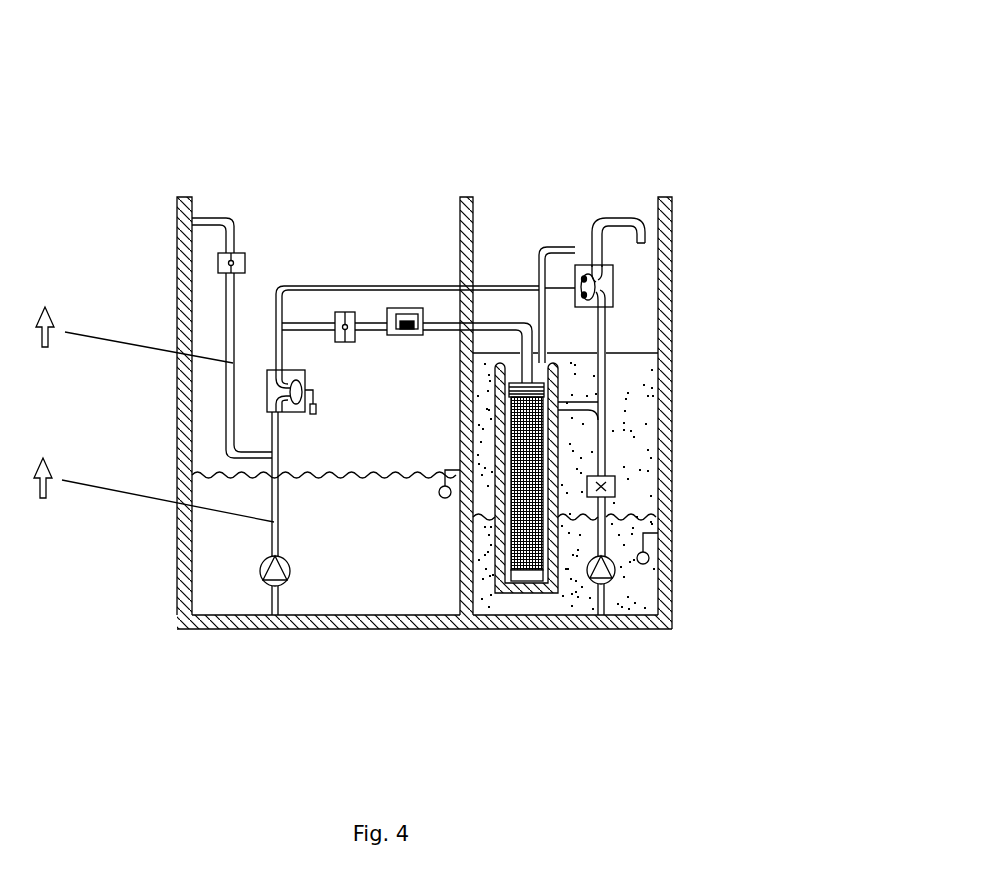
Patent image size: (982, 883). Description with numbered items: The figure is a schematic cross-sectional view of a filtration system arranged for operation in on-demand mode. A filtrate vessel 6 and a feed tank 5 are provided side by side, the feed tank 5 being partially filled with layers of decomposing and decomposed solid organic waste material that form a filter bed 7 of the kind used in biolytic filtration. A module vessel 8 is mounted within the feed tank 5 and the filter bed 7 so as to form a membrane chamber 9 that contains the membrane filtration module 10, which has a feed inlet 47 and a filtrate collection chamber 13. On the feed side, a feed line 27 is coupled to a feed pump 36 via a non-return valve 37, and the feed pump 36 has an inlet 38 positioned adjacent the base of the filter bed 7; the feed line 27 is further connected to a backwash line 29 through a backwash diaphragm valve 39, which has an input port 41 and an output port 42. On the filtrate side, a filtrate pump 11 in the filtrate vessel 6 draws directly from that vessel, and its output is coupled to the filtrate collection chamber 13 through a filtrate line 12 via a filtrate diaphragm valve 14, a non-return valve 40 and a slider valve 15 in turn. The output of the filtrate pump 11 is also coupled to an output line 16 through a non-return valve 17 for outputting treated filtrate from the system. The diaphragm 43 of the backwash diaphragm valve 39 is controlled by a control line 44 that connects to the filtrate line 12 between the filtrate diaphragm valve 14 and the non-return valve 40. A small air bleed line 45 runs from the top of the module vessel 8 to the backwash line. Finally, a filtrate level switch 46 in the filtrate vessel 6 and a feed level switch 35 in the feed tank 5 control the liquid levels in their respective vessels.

The feed tank 5 is at (673, 572).
The filtrate vessel 6 is at (178, 337).
The filter bed 7 is at (636, 367).
The module vessel 8 is at (557, 470).
The membrane chamber 9 is at (505, 593).
The membrane filtration module 10 is at (541, 467).
The filtrate pump 11 is at (273, 578).
The filtrate line 12 is at (500, 287).
The filtrate collection chamber 13 is at (515, 365).
The filtrate diaphragm valve 14 is at (272, 370).
The slider valve 15 is at (408, 308).
The output line 16 is at (219, 217).
The non-return valve 17 is at (217, 254).
The feed line 27 is at (597, 540).
The backwash line 29 is at (604, 347).
The feed level switch 35 is at (648, 551).
The feed pump 36 is at (611, 577).
The non-return valve 37 is at (614, 478).
The inlet 38 is at (647, 628).
The backwash diaphragm valve 39 is at (605, 285).
The non-return valve 40 is at (342, 312).
The input port 41 is at (604, 318).
The output port 42 is at (603, 252).
The diaphragm 43 is at (603, 214).
The control line 44 is at (512, 287).
The air bleed line 45 is at (562, 247).
The filtrate level switch 46 is at (443, 498).
The feed inlet 47 is at (552, 408).